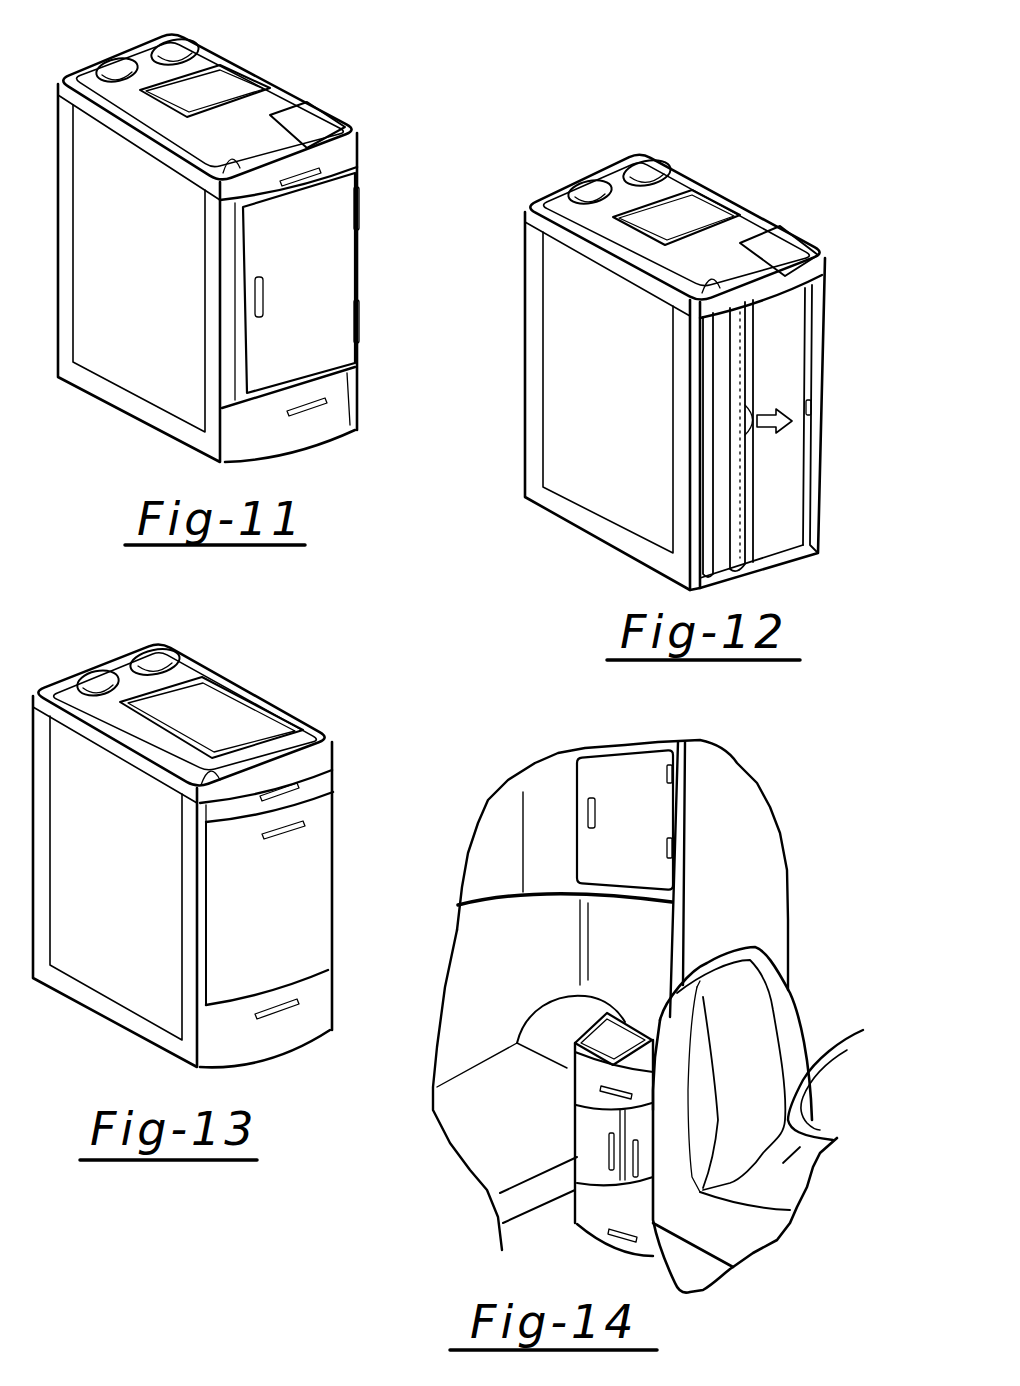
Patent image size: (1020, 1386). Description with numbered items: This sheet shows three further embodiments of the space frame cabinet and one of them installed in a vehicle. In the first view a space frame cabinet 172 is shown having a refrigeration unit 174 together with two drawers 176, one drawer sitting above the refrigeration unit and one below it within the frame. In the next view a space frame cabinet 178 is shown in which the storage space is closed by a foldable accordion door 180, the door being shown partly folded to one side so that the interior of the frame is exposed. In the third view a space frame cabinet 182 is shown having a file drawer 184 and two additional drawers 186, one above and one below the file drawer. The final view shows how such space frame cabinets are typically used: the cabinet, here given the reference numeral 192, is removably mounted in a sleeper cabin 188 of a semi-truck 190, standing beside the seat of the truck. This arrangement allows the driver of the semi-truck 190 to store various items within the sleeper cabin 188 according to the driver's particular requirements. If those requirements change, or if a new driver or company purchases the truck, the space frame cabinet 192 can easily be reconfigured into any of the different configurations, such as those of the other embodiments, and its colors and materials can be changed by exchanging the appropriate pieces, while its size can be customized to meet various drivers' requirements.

In FIG. 11, the space frame cabinet 172 is at (274, 238).
In FIG. 11, the refrigeration unit 174 is at (340, 247).
In FIG. 11, the drawers 176 is at (340, 160).
In FIG. 12, the space frame cabinet 178 is at (713, 359).
In FIG. 12, the foldable accordion door 180 is at (742, 364).
In FIG. 13, the space frame cabinet 182 is at (245, 842).
In FIG. 13, the file drawer 184 is at (300, 853).
In FIG. 13, the additional drawers 186 is at (320, 775).
In FIG. 14, the sleeper cabin 188 is at (535, 920).
In FIG. 14, the semi-truck 190 is at (822, 960).
In FIG. 14, the space frame cabinet 192 is at (597, 1118).